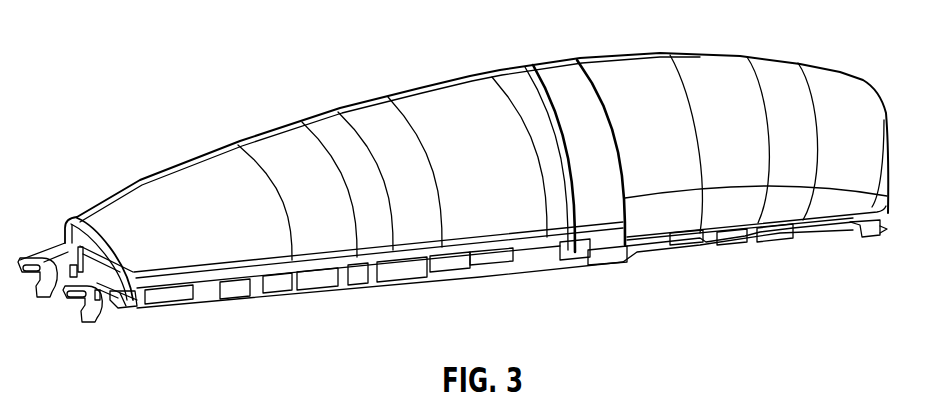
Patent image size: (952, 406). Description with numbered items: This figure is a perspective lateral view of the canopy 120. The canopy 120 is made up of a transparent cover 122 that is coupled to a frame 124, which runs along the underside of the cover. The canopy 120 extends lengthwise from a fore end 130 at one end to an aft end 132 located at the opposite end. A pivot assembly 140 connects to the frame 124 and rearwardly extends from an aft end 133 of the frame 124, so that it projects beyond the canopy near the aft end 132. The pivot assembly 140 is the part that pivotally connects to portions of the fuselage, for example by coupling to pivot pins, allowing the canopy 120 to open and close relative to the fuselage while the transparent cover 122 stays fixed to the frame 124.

The canopy 120 is at (112, 152).
The transparent cover 122 is at (445, 97).
The fore end 130 is at (887, 81).
The frame 124 is at (295, 283).
The aft end 132 is at (50, 216).
The pivot assembly 140 is at (77, 337).
The aft end of the frame 133 is at (136, 320).